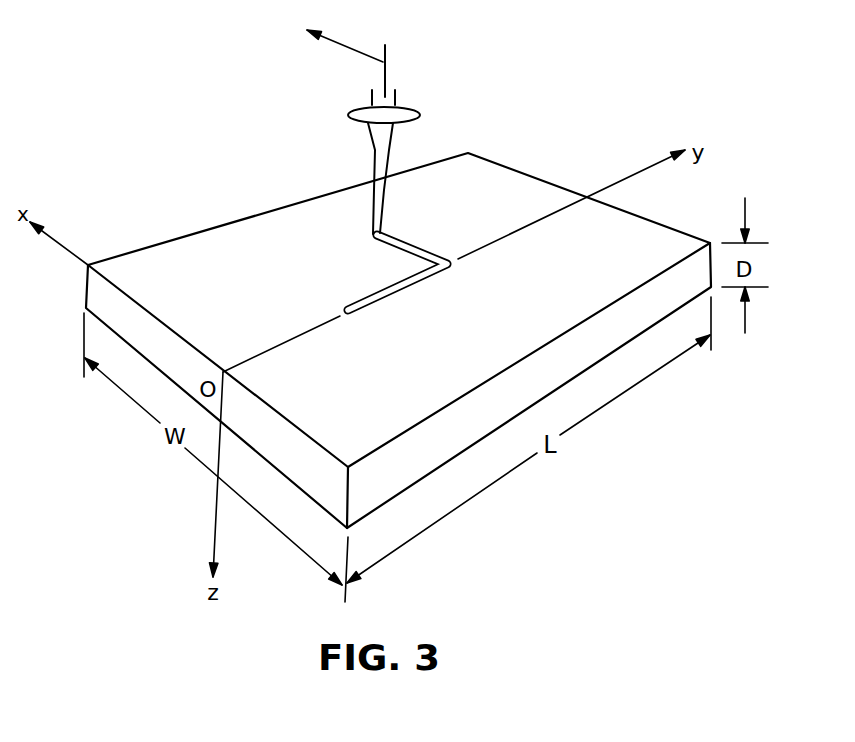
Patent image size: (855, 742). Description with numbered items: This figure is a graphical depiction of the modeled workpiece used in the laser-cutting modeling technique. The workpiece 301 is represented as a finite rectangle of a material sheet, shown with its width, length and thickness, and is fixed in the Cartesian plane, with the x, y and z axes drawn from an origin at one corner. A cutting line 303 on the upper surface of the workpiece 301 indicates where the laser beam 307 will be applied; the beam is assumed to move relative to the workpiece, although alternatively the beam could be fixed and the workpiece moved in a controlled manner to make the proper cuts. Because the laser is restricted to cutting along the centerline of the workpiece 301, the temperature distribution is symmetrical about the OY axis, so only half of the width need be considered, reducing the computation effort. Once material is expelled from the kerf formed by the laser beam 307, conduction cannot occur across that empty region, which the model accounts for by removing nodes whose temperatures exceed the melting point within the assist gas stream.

The workpiece 301 is at (512, 168).
The cutting line 303 is at (397, 298).
The laser beam 307 is at (381, 147).